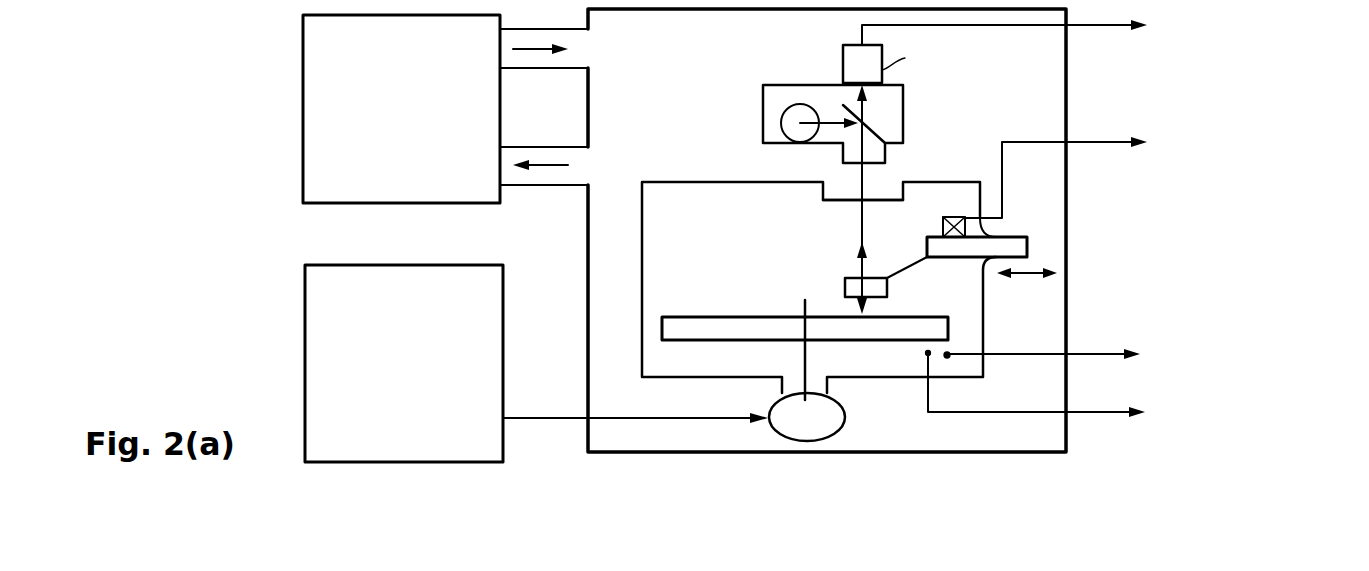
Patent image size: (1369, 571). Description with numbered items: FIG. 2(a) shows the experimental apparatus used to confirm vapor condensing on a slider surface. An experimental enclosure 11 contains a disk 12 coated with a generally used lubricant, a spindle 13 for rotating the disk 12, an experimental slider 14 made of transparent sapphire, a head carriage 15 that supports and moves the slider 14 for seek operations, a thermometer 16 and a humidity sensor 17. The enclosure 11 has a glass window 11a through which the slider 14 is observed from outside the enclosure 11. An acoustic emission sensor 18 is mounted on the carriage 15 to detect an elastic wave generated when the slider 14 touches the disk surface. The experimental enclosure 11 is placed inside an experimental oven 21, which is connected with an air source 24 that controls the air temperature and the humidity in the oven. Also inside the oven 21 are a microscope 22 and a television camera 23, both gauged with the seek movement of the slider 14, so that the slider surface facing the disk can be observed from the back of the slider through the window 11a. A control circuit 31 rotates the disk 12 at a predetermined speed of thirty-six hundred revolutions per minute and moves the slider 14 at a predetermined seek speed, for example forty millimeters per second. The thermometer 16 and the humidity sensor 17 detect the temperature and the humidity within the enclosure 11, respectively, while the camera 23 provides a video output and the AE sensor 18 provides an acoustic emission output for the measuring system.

The experimental enclosure 11 is at (642, 258).
The glass window 11a is at (903, 198).
The disk 12 is at (714, 317).
The spindle 13 is at (805, 352).
The experimental slider 14 is at (845, 288).
The head carriage 15 is at (1017, 245).
The thermometer 16 is at (948, 352).
The humidity sensor 17 is at (928, 353).
The acoustic emission sensor 18 is at (943, 217).
The experimental oven 21 is at (1066, 85).
The microscope 22 is at (763, 120).
The television camera 23 is at (843, 62).
The air source 24 is at (303, 62).
The control circuit 31 is at (305, 313).